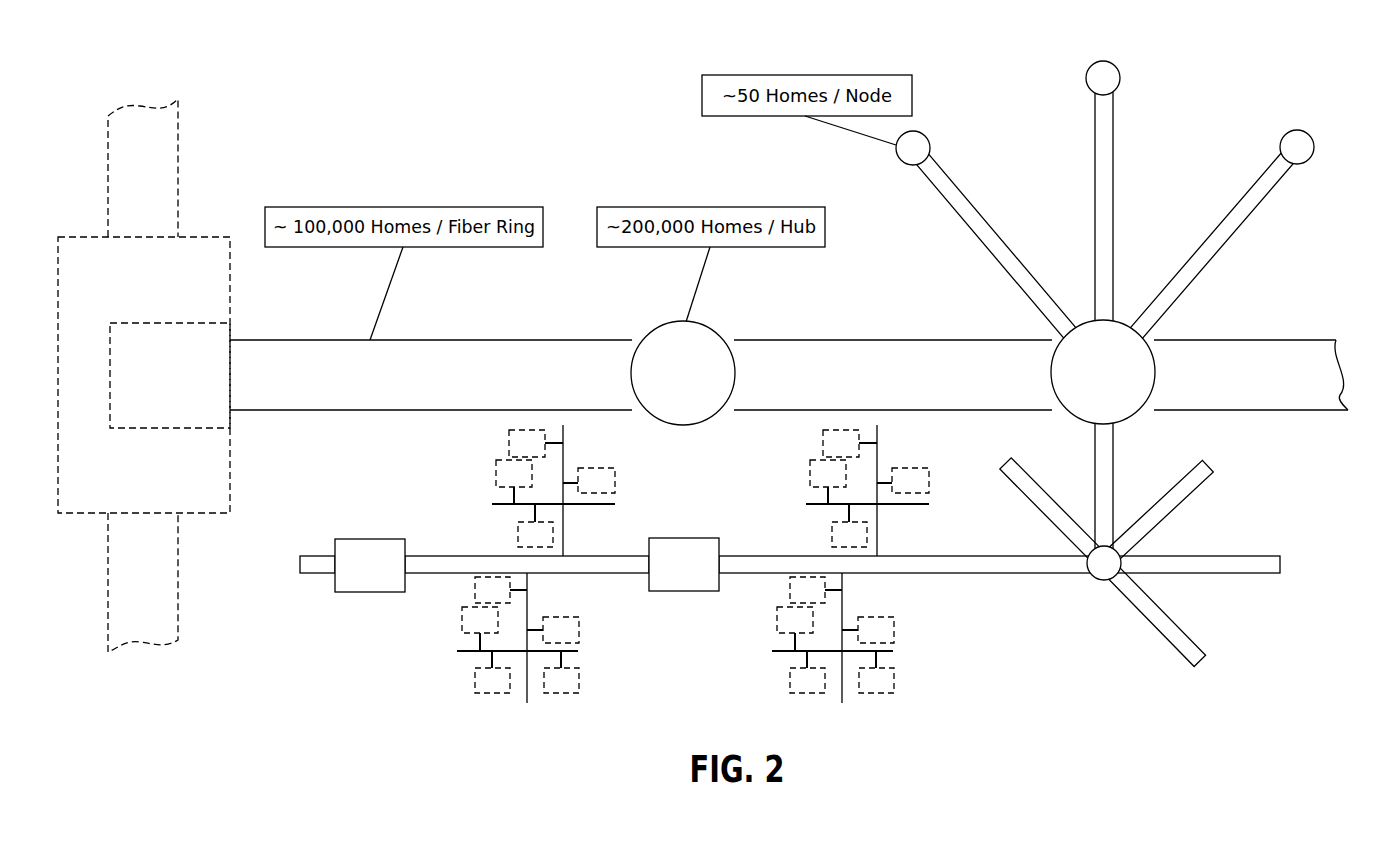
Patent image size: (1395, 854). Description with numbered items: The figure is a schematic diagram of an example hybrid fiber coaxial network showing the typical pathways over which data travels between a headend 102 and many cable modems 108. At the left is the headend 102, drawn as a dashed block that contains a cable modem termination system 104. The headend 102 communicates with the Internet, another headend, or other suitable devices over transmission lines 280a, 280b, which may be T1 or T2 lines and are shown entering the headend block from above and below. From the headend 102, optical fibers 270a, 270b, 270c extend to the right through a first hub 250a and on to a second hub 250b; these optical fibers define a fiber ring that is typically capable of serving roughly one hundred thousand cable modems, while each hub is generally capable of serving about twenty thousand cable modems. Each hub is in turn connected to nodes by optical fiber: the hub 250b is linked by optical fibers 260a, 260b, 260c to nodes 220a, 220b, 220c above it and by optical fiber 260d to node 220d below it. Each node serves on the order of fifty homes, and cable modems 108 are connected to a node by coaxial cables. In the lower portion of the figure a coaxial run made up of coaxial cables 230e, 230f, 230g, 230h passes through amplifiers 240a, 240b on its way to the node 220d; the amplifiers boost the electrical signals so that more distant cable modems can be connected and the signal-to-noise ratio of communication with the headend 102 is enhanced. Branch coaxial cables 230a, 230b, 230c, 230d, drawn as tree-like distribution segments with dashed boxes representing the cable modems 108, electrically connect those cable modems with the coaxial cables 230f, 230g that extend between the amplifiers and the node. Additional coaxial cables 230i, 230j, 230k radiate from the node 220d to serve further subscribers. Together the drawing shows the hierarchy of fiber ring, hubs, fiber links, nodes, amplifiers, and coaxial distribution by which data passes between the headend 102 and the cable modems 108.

The headend 102 is at (213, 515).
The CMTS (cable modem termination system) 104 is at (178, 428).
The cable modem 108 is at (509, 448).
The node 220a is at (930, 140).
The node 220b is at (1120, 74).
The node 220c is at (1314, 140).
The node 220d is at (1097, 583).
The coaxial cable 230a is at (539, 490).
The coaxial cable 230b is at (877, 458).
The coaxial cable 230c is at (527, 607).
The coaxial cable 230d is at (842, 607).
The coaxial cable 230e is at (327, 573).
The coaxial cable 230f is at (430, 557).
The coaxial cable 230g is at (947, 573).
The coaxial cable 230h is at (1245, 573).
The coaxial cable 230i is at (1022, 497).
The coaxial cable 230j is at (1190, 498).
The coaxial cable 230k is at (1203, 665).
The amplifier 240a is at (368, 592).
The amplifier 240b is at (685, 591).
The hub 250a is at (713, 327).
The hub 250b is at (1140, 413).
The optical fiber 260a is at (980, 209).
The optical fiber 260b is at (1113, 157).
The optical fiber 260c is at (1248, 218).
The optical fiber 260d is at (1113, 480).
The optical fiber 270a is at (507, 340).
The optical fiber 270b is at (893, 340).
The optical fiber 270c is at (1313, 340).
The transmission line 280a is at (178, 165).
The transmission line 280b is at (178, 572).